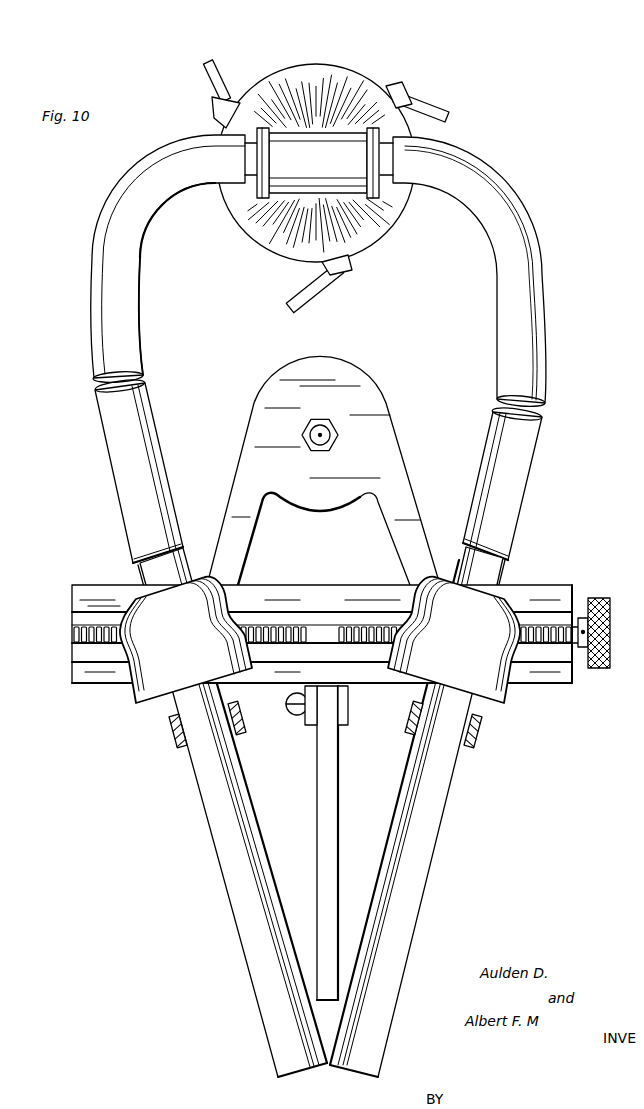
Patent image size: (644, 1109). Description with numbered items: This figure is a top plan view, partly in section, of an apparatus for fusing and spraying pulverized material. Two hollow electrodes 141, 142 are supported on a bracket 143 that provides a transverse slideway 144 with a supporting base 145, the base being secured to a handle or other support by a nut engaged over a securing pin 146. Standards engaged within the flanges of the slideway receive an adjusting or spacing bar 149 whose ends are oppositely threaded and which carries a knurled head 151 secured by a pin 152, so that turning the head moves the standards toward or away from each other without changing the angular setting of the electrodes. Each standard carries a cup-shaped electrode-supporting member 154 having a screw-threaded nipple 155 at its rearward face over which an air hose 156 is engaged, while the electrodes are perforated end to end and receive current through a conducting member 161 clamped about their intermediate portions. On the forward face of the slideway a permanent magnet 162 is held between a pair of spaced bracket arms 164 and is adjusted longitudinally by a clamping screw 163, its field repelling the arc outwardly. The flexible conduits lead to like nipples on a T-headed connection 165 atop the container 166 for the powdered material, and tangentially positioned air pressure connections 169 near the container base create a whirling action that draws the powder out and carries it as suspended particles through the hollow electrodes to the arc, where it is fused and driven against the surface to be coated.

The hollow electrode 141 is at (248, 982).
The hollow electrode 142 is at (410, 977).
The bracket 143 is at (552, 583).
The transverse slideway 144 is at (565, 650).
The supporting base 145 is at (392, 402).
The securing pin 146 is at (338, 437).
The adjusting or spacing bar 149 is at (73, 635).
The knurled head 151 is at (611, 618).
The pin 152 is at (583, 618).
The cup-shaped electrode-supporting member 154 is at (132, 697).
The screw-threaded nipple 155 is at (142, 570).
The air hose 156 is at (545, 270).
The conducting member 161 is at (177, 745).
The permanent magnet 162 is at (338, 797).
The clamping screw 163 is at (298, 715).
The bracket arms 164 is at (346, 708).
The T-headed connection 165 is at (320, 131).
The container 166 is at (298, 65).
The air pressure connections 169 is at (227, 93).